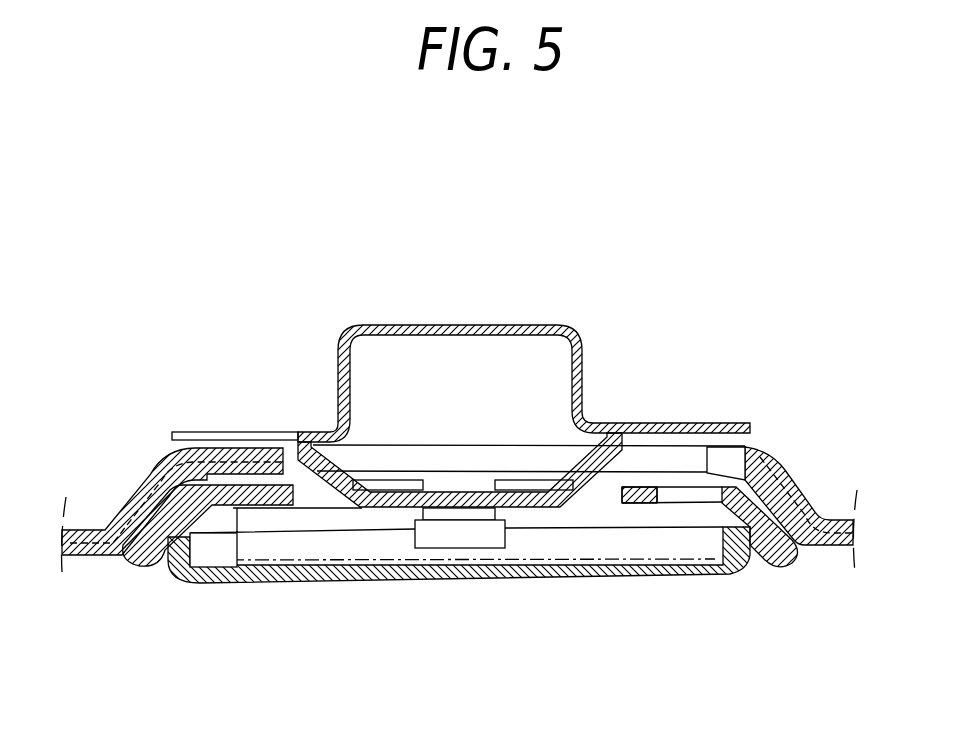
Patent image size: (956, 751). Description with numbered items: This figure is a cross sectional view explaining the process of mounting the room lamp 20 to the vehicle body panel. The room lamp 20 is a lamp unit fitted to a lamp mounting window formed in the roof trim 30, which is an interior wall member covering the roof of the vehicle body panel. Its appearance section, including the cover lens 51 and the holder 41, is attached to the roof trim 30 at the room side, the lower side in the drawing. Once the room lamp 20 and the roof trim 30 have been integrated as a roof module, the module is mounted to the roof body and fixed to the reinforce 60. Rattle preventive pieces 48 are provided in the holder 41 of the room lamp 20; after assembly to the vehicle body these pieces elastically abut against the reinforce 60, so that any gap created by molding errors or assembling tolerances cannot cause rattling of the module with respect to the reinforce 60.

The room lamp 20 is at (518, 592).
The roof trim 30 is at (792, 478).
The holder 41 is at (460, 488).
The rattle preventive pieces 48 is at (284, 455).
The cover lens 51 is at (387, 590).
The reinforce 60 is at (481, 322).